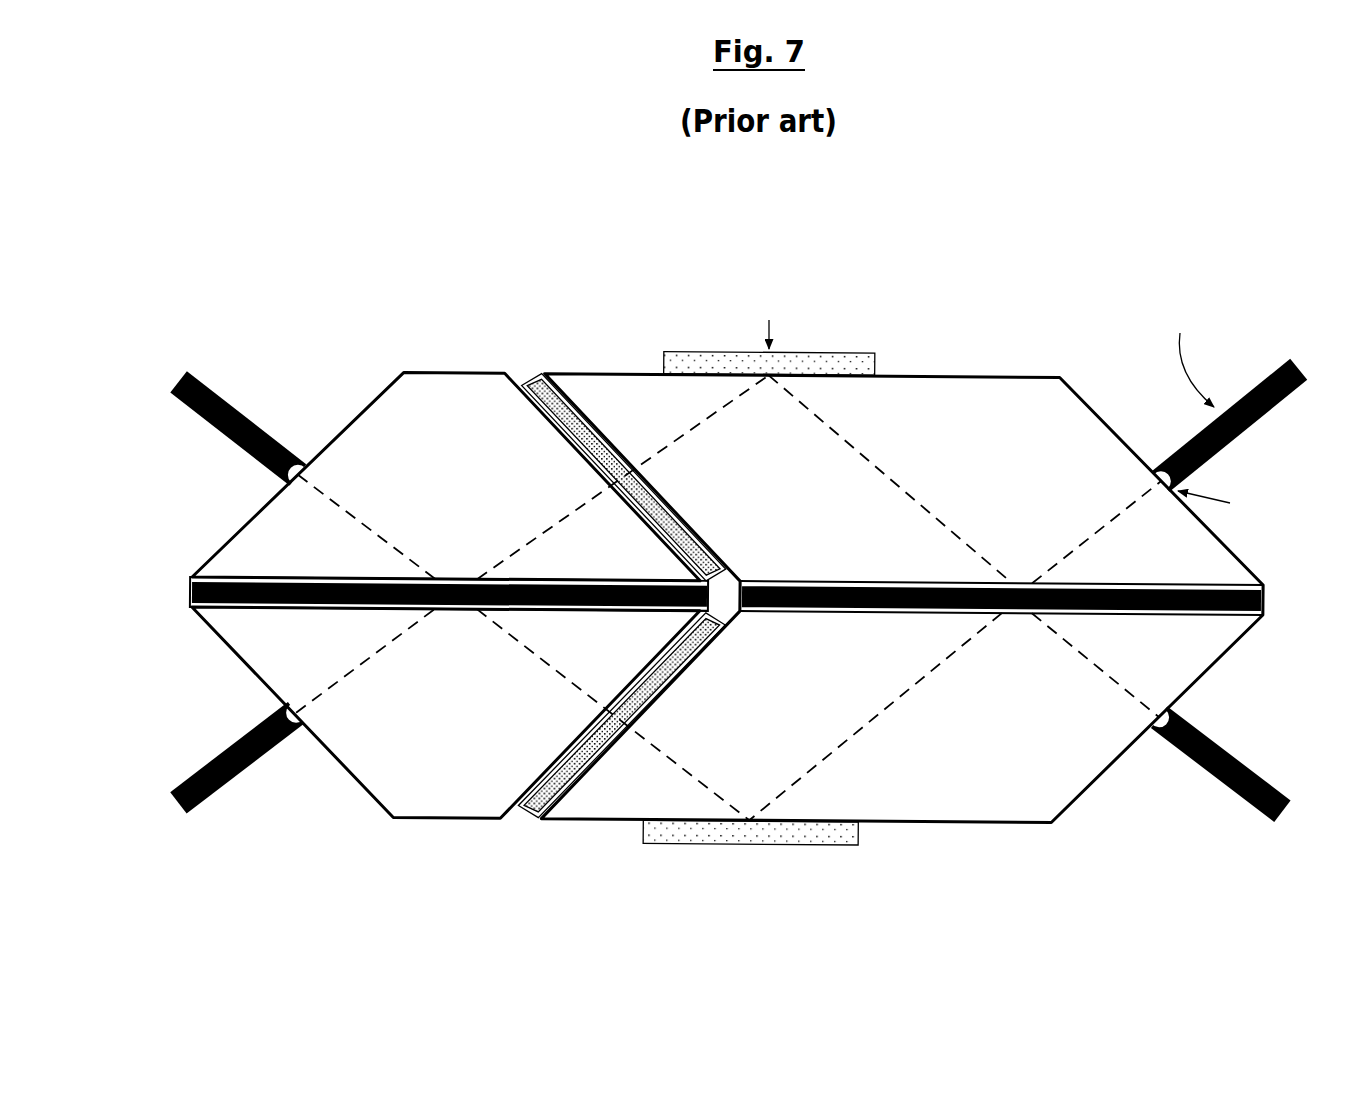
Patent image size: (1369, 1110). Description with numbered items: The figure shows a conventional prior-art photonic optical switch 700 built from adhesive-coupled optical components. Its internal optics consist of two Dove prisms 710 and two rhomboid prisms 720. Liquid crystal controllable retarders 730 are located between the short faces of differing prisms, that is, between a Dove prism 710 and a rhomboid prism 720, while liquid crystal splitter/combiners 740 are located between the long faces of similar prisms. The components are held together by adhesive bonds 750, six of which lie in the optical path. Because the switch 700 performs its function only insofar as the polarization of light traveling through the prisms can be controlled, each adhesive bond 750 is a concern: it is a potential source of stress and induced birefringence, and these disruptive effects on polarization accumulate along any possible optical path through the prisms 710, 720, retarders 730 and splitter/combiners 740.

The optical switch 700 is at (727, 535).
The Dove prism 710 is at (438, 543).
The rhomboid prism 720 is at (902, 577).
The liquid crystal controllable retarder 730 is at (486, 596).
The liquid crystal splitter/combiner 740 is at (738, 656).
The adhesive bond 750 is at (724, 603).